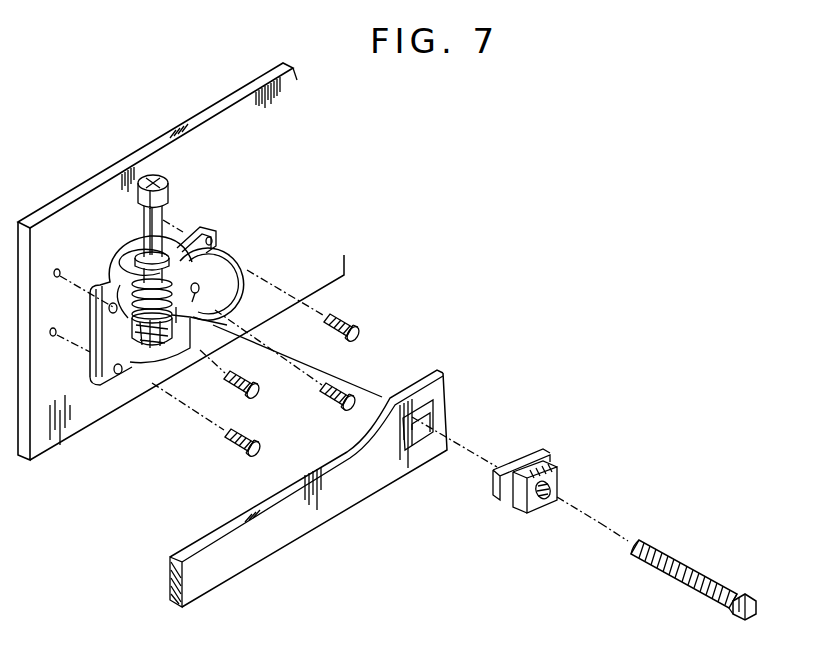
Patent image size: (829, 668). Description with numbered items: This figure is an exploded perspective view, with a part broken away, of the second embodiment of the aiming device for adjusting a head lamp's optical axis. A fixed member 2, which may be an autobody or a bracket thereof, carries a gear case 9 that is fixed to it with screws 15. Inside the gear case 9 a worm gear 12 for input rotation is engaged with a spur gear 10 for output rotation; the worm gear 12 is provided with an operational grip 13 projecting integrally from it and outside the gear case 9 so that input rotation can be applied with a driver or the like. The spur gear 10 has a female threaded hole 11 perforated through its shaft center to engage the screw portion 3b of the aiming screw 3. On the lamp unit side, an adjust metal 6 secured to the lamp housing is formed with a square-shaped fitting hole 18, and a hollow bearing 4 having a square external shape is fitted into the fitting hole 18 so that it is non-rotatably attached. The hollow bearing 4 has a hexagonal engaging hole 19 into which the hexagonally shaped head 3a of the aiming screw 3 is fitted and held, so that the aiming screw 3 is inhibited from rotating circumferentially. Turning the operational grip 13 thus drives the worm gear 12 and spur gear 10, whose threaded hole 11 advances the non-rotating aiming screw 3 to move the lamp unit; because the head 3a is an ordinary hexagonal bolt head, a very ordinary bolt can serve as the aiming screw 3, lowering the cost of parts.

The fixed member 2 is at (200, 117).
The aiming screw 3 is at (680, 568).
The head 3a is at (747, 600).
The screw portion 3b is at (658, 550).
The hollow bearing 4 is at (553, 468).
The adjust metal 6 is at (359, 490).
The gear case 9 is at (113, 257).
The spur gear 10 is at (198, 238).
The female threaded hole 11 is at (200, 284).
The worm gear 12 is at (137, 317).
The operational grip 13 is at (150, 177).
The screws 15 is at (347, 324).
The fitting hole 18 is at (430, 413).
The engaging hole 19 is at (548, 503).